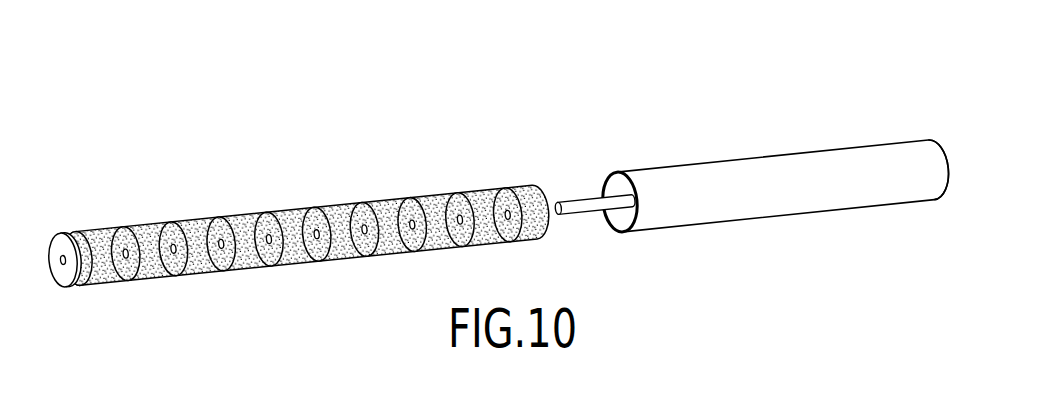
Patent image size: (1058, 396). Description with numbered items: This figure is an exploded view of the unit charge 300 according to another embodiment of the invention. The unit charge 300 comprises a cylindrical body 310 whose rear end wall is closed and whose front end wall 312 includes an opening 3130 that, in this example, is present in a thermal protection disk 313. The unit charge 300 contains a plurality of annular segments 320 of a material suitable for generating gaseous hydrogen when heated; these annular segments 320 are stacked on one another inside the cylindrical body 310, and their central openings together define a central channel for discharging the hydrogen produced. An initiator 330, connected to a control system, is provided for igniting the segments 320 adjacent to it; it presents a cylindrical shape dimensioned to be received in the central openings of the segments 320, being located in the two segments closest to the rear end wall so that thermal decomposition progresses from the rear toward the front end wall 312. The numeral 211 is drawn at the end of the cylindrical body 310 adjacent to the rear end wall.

The unit charge 300 is at (630, 122).
The cylindrical body 310 is at (803, 165).
The front end wall 312 is at (613, 228).
The closed tube end 211 is at (940, 140).
The initiator 330 is at (567, 197).
The annular segments 320 is at (535, 185).
The opening 3130 is at (57, 236).
The thermal protection disk 313 is at (67, 283).